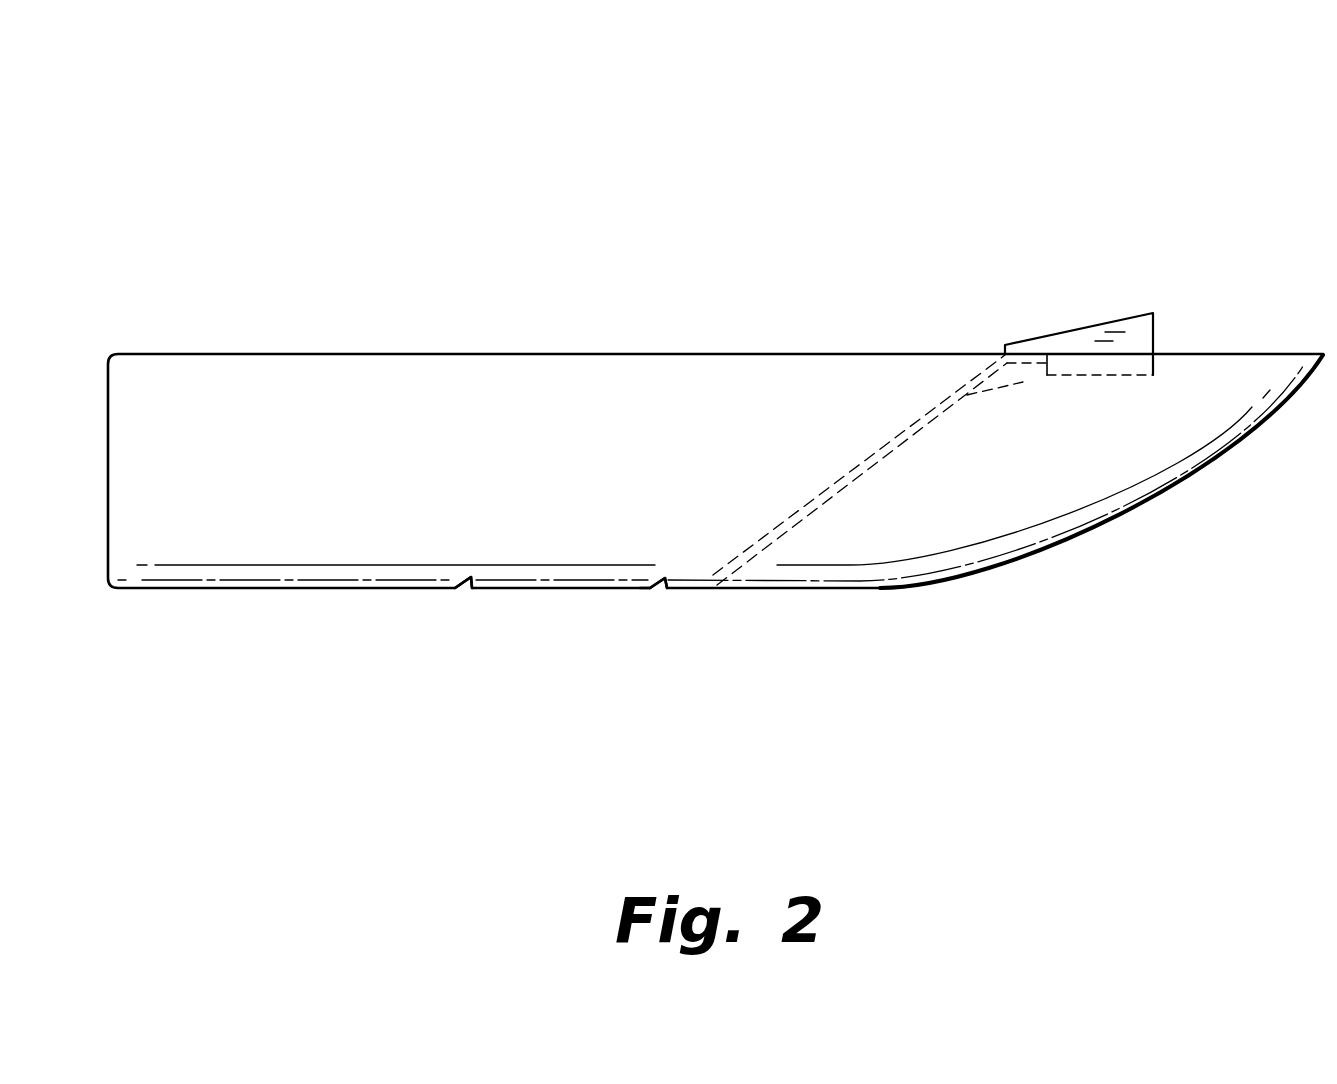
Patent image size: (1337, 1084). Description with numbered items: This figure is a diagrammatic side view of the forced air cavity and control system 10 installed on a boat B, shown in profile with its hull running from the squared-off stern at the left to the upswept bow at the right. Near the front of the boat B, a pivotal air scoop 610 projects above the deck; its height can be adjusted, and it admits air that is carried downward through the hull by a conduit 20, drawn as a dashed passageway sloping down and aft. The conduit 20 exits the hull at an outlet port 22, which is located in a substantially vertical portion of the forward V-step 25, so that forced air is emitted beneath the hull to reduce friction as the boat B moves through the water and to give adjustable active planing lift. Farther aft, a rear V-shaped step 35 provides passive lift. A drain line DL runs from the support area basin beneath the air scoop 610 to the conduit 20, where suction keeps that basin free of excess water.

The forced air cavity and control system 10 is at (1127, 141).
The air scoop 610 is at (1153, 313).
The conduits 20 is at (845, 474).
The drain line DL is at (1023, 382).
The outlet port 22 is at (665, 589).
The V-step 25 is at (650, 589).
The rear V-shaped step 35 is at (462, 589).
The boat B is at (1097, 538).